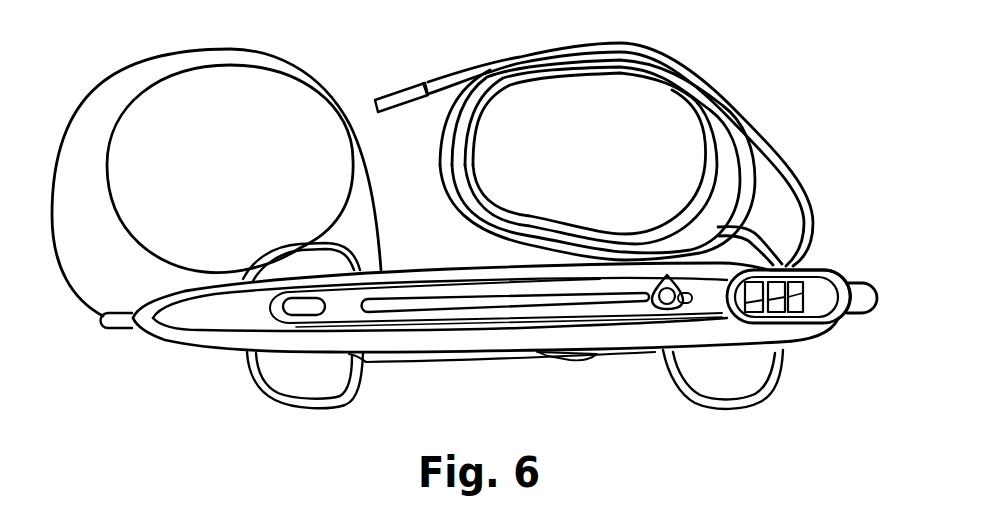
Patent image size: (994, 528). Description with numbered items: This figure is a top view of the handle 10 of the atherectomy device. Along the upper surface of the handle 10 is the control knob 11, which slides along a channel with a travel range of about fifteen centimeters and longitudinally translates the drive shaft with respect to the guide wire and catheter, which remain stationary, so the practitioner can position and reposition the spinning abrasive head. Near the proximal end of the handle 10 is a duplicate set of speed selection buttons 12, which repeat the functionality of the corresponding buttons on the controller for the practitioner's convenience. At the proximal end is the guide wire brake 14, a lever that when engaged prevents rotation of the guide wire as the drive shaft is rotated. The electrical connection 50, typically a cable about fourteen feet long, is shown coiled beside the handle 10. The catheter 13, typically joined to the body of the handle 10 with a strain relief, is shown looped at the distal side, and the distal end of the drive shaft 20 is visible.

The handle 10 is at (408, 270).
The control knob 11 is at (668, 308).
The speed selection buttons 12 is at (781, 284).
The catheter 13 is at (147, 258).
The guide wire brake 14 is at (870, 283).
The drive shaft 20 is at (378, 238).
The electrical connection 50 is at (678, 97).